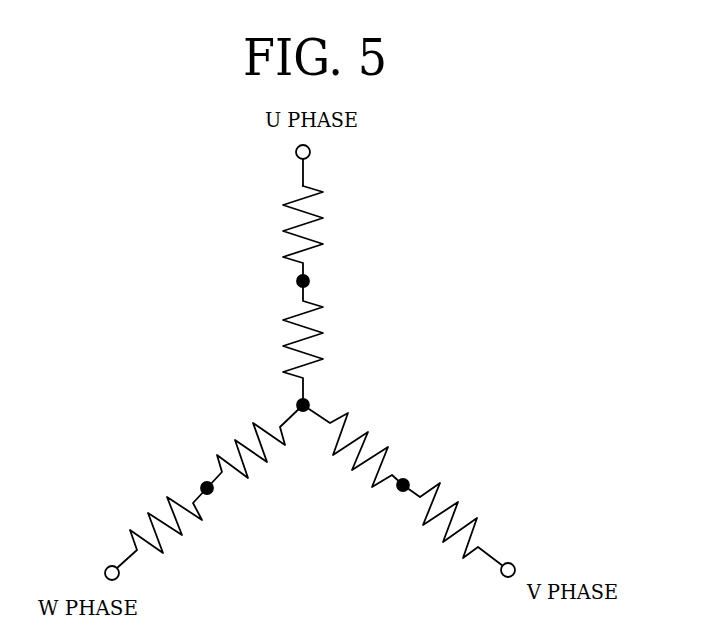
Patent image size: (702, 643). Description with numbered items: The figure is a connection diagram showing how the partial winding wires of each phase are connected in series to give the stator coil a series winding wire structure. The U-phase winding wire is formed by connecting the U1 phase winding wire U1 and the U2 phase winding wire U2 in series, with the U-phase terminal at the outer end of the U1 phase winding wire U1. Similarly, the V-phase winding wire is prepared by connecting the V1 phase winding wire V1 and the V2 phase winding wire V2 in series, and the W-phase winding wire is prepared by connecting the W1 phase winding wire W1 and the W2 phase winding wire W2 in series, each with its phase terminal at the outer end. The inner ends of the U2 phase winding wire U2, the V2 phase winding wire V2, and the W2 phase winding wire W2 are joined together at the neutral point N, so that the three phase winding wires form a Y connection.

The U1 phase winding wire U1 is at (333, 233).
The U2 phase winding wire U2 is at (333, 343).
The V1 phase winding wire V1 is at (453, 522).
The V2 phase winding wire V2 is at (353, 445).
The W1 phase winding wire W1 is at (157, 528).
The W2 phase winding wire W2 is at (250, 446).
The neutral point N is at (315, 395).